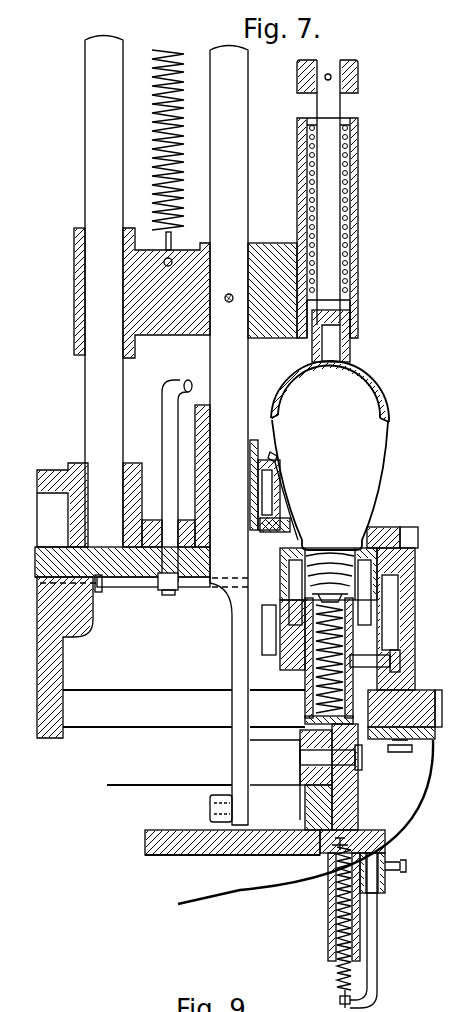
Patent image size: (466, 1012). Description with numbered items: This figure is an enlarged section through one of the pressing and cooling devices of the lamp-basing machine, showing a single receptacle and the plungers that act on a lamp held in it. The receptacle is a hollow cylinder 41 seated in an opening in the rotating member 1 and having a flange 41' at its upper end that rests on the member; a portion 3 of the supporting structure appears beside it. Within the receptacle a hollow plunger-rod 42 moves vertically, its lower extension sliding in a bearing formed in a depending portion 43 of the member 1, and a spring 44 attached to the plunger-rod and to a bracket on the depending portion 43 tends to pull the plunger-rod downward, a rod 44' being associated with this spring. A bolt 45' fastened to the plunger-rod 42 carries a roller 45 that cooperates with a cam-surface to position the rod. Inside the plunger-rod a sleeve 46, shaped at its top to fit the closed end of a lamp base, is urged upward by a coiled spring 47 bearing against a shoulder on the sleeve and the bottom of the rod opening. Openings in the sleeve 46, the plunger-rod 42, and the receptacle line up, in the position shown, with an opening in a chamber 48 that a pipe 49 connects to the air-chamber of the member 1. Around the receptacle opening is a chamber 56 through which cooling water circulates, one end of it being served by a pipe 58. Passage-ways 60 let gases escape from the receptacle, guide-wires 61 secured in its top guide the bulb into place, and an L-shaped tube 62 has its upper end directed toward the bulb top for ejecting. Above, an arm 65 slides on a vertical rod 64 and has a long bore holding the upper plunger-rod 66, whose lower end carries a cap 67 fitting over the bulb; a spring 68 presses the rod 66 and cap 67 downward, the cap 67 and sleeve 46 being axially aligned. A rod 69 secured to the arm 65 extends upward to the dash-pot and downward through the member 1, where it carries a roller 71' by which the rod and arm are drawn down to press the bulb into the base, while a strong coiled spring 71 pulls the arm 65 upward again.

The member 1 is at (418, 578).
The base flange 3 is at (440, 706).
The hollow cylinder 41 is at (280, 641).
The flange 41' is at (419, 535).
The plunger-rod 42 is at (307, 683).
The depending portion 43 is at (390, 843).
The spring 44 is at (329, 927).
The rod 44' is at (382, 930).
The roller 45 is at (291, 780).
The bolt 45' is at (312, 757).
The sleeve 46 is at (316, 699).
The coiled spring 47 is at (312, 718).
The chamber 48 is at (388, 664).
The pipe 49 is at (272, 632).
The chamber 56 is at (372, 609).
The pipe 58 is at (150, 584).
The passage-ways 60 is at (370, 528).
The guide-wires 61 is at (279, 458).
The L-shaped tube 62 is at (166, 420).
The rod 64 is at (92, 409).
The arm 65 is at (293, 245).
The upper plunger-rod 66 is at (353, 345).
The cap 67 is at (384, 381).
The spring 68 is at (356, 247).
The rod 69 is at (229, 436).
The coiled spring 71 is at (179, 150).
The roller 71' is at (202, 805).